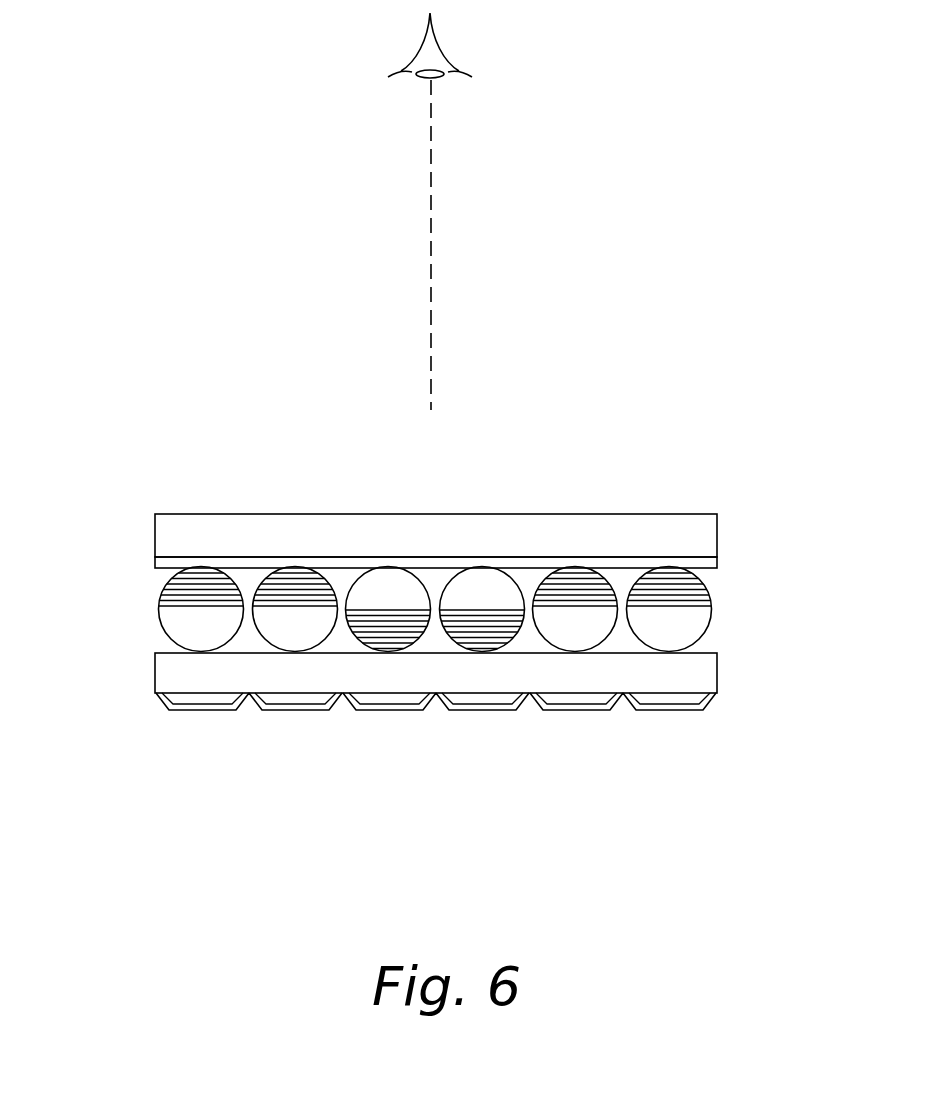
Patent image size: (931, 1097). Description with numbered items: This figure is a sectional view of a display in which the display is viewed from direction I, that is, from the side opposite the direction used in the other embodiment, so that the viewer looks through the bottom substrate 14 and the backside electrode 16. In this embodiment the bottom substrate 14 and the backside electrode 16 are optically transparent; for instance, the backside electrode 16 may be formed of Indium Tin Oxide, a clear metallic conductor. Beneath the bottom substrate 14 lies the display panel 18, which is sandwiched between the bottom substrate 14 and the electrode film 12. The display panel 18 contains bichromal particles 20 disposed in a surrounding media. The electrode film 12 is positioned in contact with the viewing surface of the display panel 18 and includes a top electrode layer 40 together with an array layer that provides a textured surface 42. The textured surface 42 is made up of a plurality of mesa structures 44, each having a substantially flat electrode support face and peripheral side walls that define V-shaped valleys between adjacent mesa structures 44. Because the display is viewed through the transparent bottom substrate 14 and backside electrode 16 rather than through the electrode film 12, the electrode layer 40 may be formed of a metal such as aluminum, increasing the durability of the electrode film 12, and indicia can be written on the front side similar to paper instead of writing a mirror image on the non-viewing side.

The viewing direction I is at (438, 48).
The electrode film 12 is at (150, 667).
The bottom substrate 14 is at (717, 540).
The backside electrode 16 is at (717, 558).
The display panel 18 is at (435, 609).
The bichromal particles 20 is at (712, 611).
The top electrode layer 40 is at (205, 704).
The textured surface 42 is at (487, 719).
The mesa structures 44 is at (687, 702).